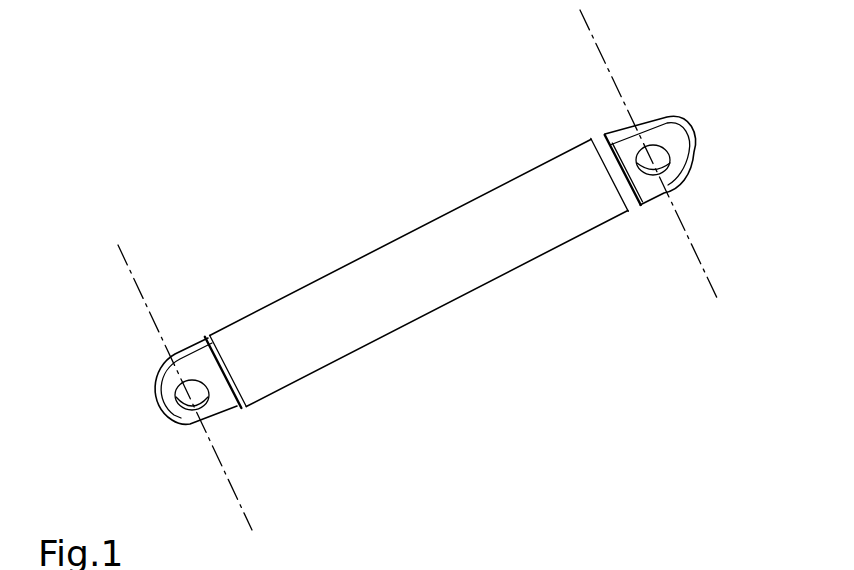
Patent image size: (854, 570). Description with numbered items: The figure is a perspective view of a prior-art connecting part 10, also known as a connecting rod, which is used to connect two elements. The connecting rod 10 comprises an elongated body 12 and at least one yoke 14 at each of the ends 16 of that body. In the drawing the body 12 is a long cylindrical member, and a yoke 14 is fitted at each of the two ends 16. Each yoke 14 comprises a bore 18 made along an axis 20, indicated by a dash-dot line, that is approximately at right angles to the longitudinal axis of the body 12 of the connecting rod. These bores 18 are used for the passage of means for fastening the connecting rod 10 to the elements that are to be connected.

The connecting part 10 is at (304, 199).
The elongated body 12 is at (485, 274).
The yoke 14 is at (166, 402).
The ends of the body 16 is at (252, 412).
The bore 18 is at (186, 384).
The axis 20 is at (145, 300).